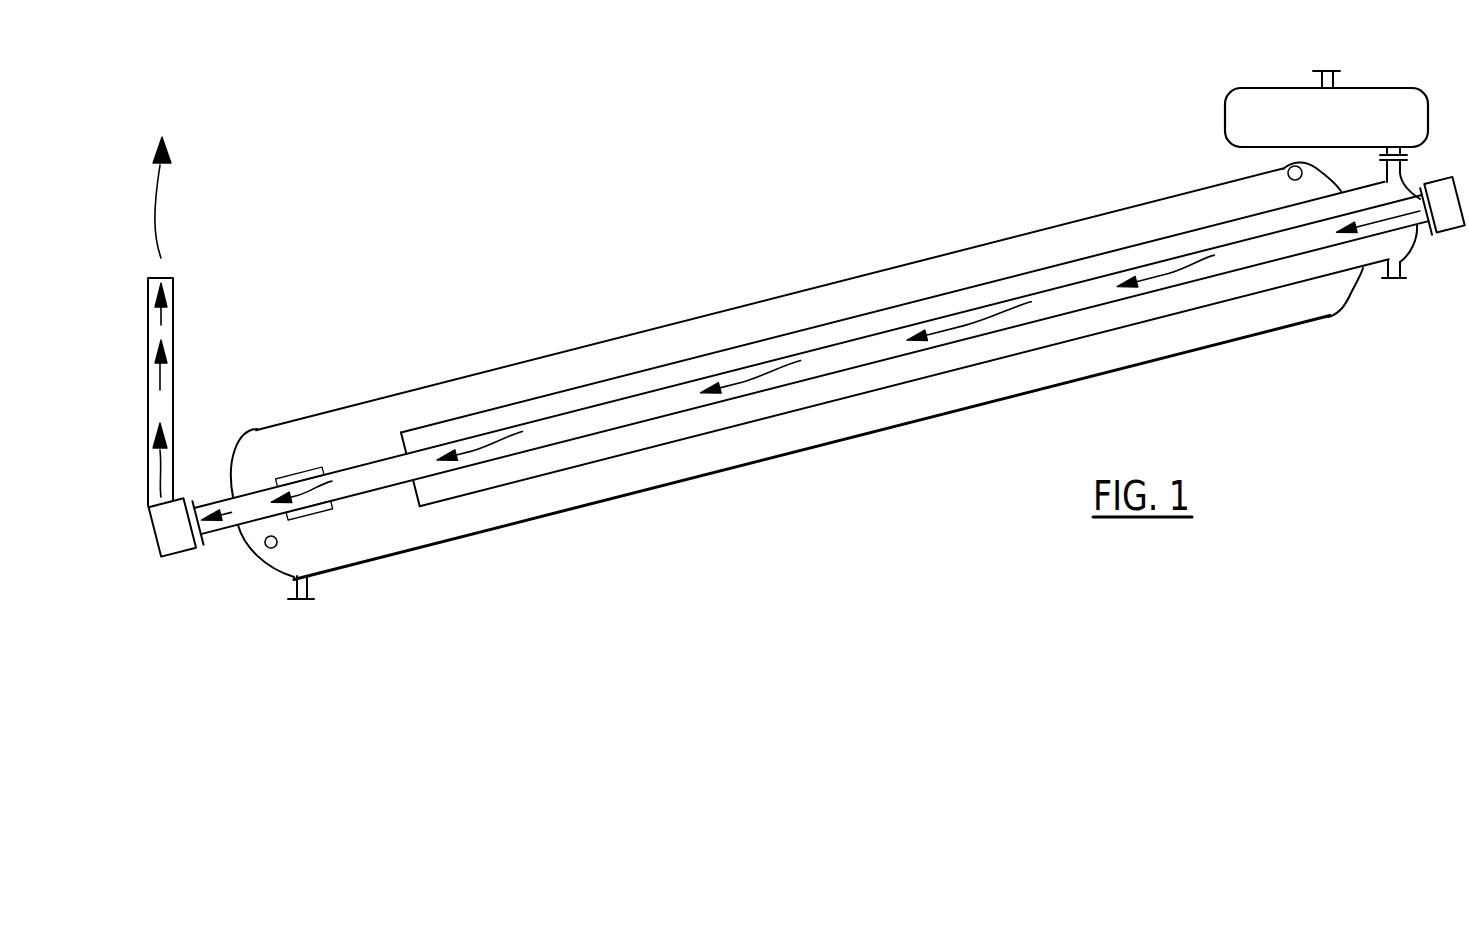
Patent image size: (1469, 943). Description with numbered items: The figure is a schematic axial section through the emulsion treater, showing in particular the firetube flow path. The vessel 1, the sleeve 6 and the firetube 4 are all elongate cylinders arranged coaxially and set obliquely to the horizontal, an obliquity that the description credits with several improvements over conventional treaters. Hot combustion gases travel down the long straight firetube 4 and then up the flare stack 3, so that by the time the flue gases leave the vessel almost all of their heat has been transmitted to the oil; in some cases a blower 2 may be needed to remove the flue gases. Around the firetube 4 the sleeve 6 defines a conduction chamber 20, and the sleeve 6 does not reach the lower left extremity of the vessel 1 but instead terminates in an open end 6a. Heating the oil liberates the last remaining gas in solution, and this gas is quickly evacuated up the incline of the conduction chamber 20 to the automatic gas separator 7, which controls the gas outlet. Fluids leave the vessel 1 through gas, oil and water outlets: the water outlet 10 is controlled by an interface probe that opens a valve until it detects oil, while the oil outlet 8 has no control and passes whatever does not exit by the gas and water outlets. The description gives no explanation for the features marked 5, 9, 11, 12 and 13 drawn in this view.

The vessel 1 is at (1460, 234).
The blower 2 is at (158, 542).
The flare stack 3 is at (175, 378).
The firetube 4 is at (983, 341).
The baffle 5 is at (328, 513).
The sleeve 6 is at (743, 425).
The open end 6a is at (414, 496).
The automatic gas separator 7 is at (1226, 105).
The oil outlet 8 is at (1393, 282).
The sensor 9 is at (1289, 176).
The water outlet 10 is at (298, 602).
The vent connection 11 is at (1324, 71).
The sensor 12 is at (268, 548).
The outer shell 13 is at (960, 257).
The conduction chamber 20 is at (891, 373).